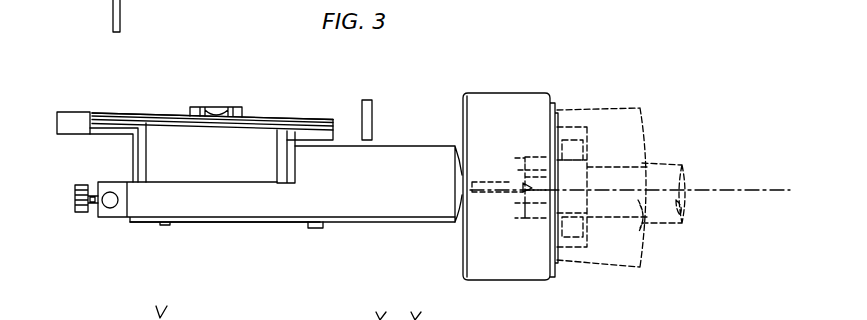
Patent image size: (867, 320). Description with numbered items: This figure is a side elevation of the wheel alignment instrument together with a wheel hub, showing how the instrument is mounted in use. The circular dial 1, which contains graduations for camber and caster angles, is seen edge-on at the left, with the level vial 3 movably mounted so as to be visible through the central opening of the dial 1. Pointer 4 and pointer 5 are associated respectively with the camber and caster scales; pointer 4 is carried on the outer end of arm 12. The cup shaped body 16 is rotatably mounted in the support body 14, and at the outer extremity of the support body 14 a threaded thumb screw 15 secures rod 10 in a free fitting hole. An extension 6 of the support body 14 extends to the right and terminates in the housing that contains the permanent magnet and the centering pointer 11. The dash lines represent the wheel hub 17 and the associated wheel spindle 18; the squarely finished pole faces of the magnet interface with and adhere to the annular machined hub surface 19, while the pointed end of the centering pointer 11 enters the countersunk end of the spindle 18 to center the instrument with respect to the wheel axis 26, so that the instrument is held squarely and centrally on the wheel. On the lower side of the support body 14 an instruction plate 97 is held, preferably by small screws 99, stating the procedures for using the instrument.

The circular dial 1 is at (292, 119).
The level vial 3 is at (218, 103).
The pointer 4 is at (73, 111).
The pointer 5 is at (347, 117).
The extension 6 is at (397, 223).
The rod 10 is at (112, 215).
The centering pointer 11 is at (498, 193).
The arm 12 is at (110, 138).
The support body 14 is at (262, 212).
The threaded thumb screw 15 is at (75, 200).
The cup shaped body 16 is at (168, 140).
The wheel hub 17 is at (640, 272).
The wheel spindle 18 is at (670, 167).
The hub surface 19 is at (493, 92).
The wheel axis 26 is at (757, 195).
The instruction plate 97 is at (235, 225).
The small screws 99 is at (313, 229).